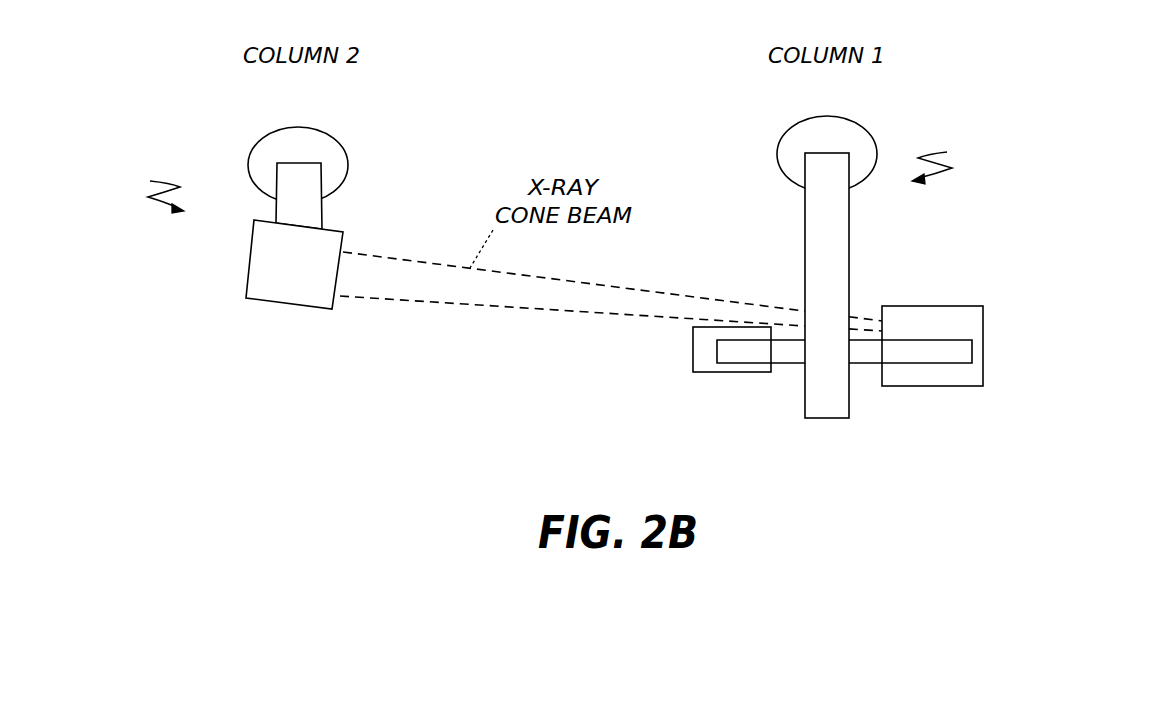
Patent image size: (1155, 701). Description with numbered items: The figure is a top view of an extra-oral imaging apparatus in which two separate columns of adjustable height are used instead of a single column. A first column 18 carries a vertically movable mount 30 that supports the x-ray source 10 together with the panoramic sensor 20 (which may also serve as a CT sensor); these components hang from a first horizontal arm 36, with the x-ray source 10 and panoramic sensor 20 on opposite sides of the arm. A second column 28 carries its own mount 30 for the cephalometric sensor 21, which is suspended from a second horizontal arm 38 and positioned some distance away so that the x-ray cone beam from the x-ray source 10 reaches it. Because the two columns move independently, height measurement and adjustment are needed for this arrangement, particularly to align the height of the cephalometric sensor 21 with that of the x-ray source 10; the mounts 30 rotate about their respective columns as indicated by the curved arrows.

The x-ray source 10 is at (925, 380).
The column 18 is at (783, 149).
The panoramic sensor 20 is at (751, 375).
The cephalometric sensor 21 is at (302, 288).
The column 28 is at (342, 167).
The mount 30 is at (548, 177).
The first horizontal arm 36 is at (818, 240).
The second horizontal arm 38 is at (308, 209).